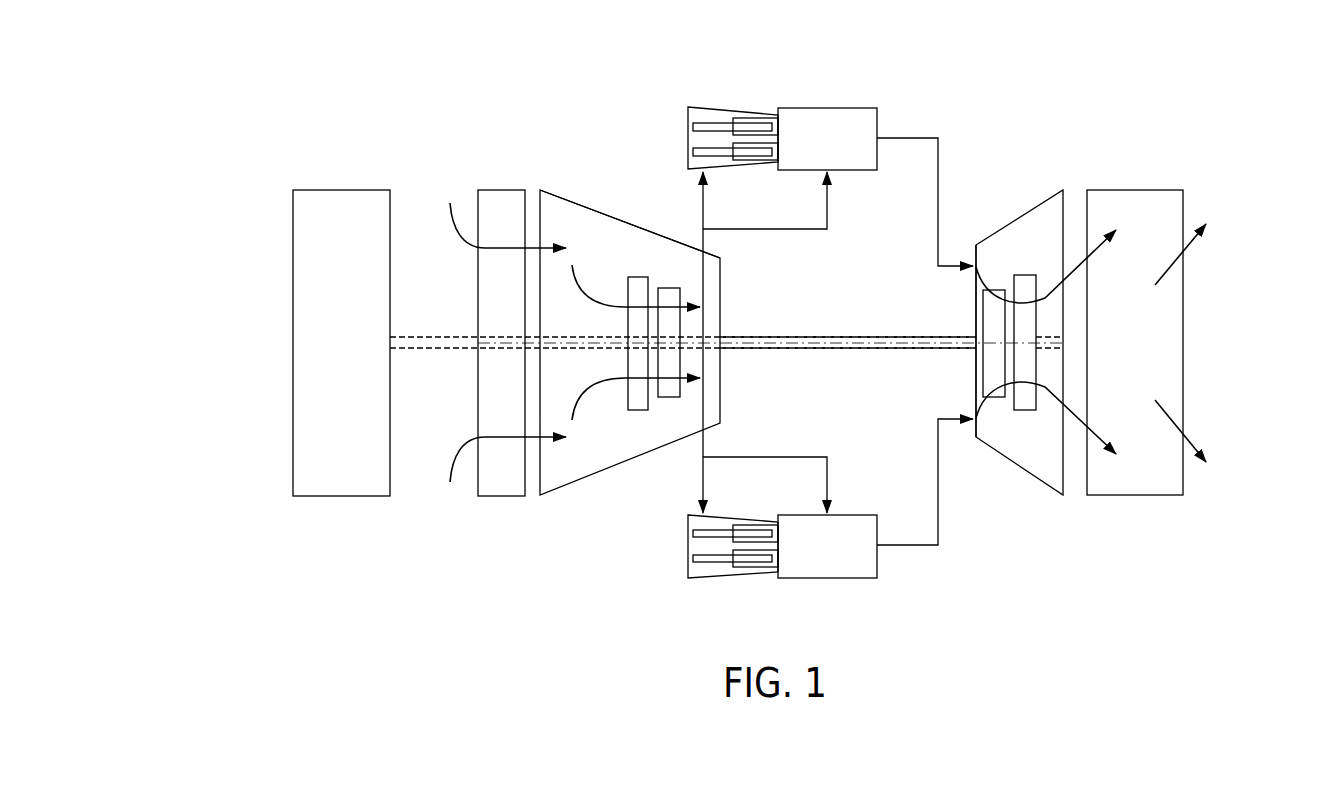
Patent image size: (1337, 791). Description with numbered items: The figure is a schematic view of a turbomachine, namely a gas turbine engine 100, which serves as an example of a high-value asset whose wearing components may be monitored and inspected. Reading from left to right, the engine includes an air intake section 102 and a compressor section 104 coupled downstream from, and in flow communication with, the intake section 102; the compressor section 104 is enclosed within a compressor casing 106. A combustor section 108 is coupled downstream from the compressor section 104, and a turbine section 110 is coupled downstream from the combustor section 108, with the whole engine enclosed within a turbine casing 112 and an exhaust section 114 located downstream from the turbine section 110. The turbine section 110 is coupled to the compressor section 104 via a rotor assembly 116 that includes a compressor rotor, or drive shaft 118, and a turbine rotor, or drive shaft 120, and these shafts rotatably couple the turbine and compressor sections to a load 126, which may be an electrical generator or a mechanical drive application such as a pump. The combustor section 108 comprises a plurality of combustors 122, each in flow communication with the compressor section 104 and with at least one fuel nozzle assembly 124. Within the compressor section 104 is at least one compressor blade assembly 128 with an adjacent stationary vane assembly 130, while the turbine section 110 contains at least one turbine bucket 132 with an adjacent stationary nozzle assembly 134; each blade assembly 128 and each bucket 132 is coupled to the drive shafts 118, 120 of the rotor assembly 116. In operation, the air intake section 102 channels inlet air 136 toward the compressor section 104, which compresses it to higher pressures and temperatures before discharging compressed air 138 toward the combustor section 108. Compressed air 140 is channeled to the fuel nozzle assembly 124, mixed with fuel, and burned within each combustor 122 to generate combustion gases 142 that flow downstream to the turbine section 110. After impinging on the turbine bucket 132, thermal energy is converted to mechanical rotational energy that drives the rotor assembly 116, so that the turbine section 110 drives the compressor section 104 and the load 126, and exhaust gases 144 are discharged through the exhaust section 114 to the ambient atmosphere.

The gas turbine engine 100 is at (264, 97).
The air intake section 102 is at (503, 190).
The compressor section 104 is at (552, 185).
The compressor casing 106 is at (619, 219).
The combustor section 108 is at (976, 119).
The turbine section 110 is at (1038, 191).
The turbine casing 112 is at (980, 244).
The exhaust section 114 is at (1135, 190).
The rotor assembly 116 is at (784, 326).
The compressor drive shaft 118 is at (567, 343).
The turbine drive shaft 120 is at (1043, 360).
The combustor 122 is at (847, 150).
The fuel nozzle assembly 124 is at (723, 103).
The load 126 is at (343, 190).
The compressor blade assembly 128 is at (668, 398).
The stationary vane assembly 130 is at (638, 411).
The turbine bucket 132 is at (992, 402).
The stationary nozzle assembly 134 is at (1025, 411).
The inlet air 136 is at (465, 225).
The compressed air 138 is at (600, 260).
The compressed air 140 is at (704, 205).
The combustion gases 142 is at (1075, 278).
The exhaust gases 144 is at (1195, 250).